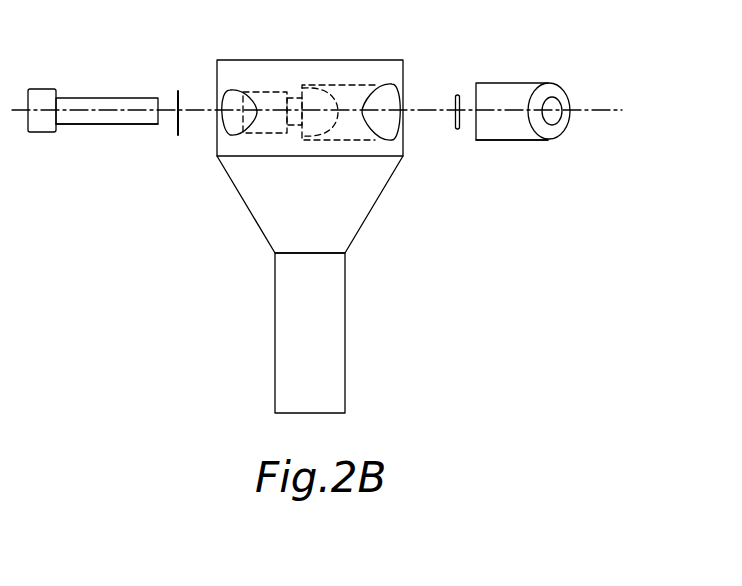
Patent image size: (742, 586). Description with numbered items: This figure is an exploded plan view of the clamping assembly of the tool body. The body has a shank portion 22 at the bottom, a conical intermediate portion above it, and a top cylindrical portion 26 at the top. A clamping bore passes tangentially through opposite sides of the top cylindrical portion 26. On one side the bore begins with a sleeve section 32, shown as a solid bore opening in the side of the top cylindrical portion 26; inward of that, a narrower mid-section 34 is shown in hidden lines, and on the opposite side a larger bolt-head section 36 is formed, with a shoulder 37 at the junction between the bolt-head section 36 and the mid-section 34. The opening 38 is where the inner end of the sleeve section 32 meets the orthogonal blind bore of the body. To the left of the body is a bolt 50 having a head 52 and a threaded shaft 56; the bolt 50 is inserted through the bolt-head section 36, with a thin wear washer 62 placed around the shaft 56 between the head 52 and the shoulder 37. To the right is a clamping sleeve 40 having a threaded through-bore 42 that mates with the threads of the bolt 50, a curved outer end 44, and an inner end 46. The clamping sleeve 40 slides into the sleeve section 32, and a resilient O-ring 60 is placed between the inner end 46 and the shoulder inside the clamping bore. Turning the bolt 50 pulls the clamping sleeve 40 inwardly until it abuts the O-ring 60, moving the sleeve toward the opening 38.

The shank portion 22 is at (345, 332).
The top cylindrical portion 26 is at (389, 59).
The sleeve section 32 is at (385, 98).
The mid-section 34 is at (287, 97).
The bolt-head section 36 is at (233, 118).
The shoulder 37 is at (268, 92).
The opening 38 is at (323, 98).
The clamping sleeve 40 is at (521, 83).
The threaded through-bore 42 is at (550, 120).
The curved outer end 44 is at (558, 94).
The inner end 46 is at (476, 140).
The bolt 50 is at (100, 97).
The head 52 is at (43, 89).
The threaded shaft 56 is at (100, 125).
The O-ring 60 is at (458, 93).
The washer 62 is at (178, 134).